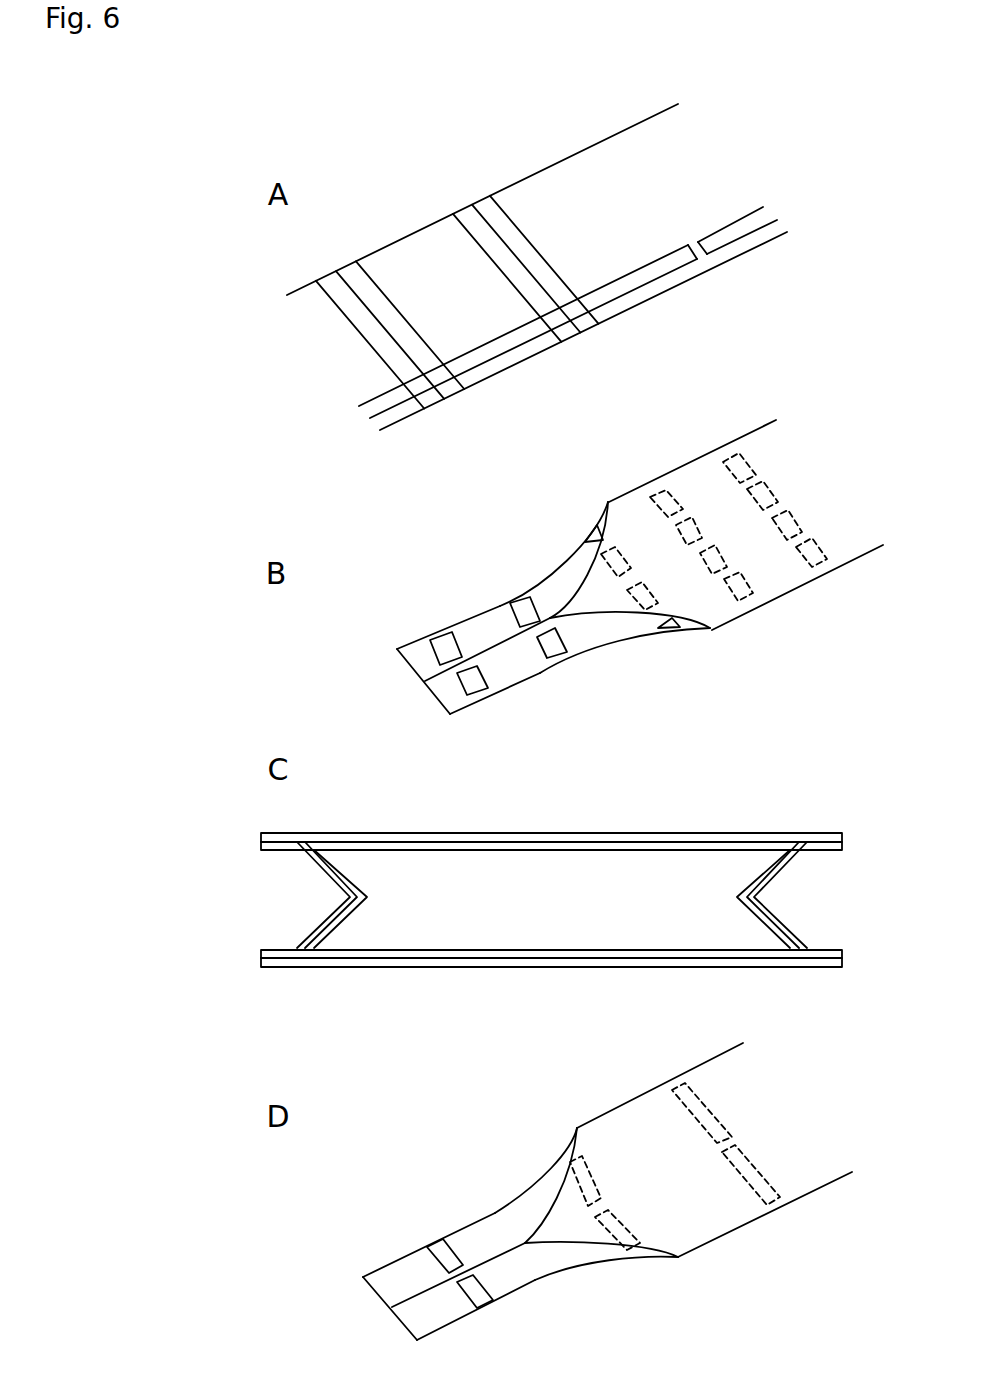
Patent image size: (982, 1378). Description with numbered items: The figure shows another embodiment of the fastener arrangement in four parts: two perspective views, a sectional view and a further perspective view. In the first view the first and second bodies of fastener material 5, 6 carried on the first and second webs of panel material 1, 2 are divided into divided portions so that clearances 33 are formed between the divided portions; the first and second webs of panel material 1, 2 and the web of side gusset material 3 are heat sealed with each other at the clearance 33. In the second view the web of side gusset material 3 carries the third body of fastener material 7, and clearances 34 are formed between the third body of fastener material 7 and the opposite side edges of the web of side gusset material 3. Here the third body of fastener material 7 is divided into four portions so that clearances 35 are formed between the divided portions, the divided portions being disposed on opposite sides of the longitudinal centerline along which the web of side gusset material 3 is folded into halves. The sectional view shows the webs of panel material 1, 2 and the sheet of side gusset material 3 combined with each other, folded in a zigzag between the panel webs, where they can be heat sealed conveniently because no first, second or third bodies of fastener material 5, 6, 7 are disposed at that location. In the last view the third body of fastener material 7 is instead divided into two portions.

The first web of panel material 1 is at (617, 188).
The second web of panel material 2 is at (540, 832).
The web of side gusset material 3 is at (510, 233).
The first body of fastener material 5 is at (622, 297).
The second body of fastener material 6 is at (463, 850).
The third body of fastener material 7 is at (572, 317).
The clearance 33 is at (704, 257).
The clearance 34 is at (752, 602).
The clearance 35 is at (708, 538).